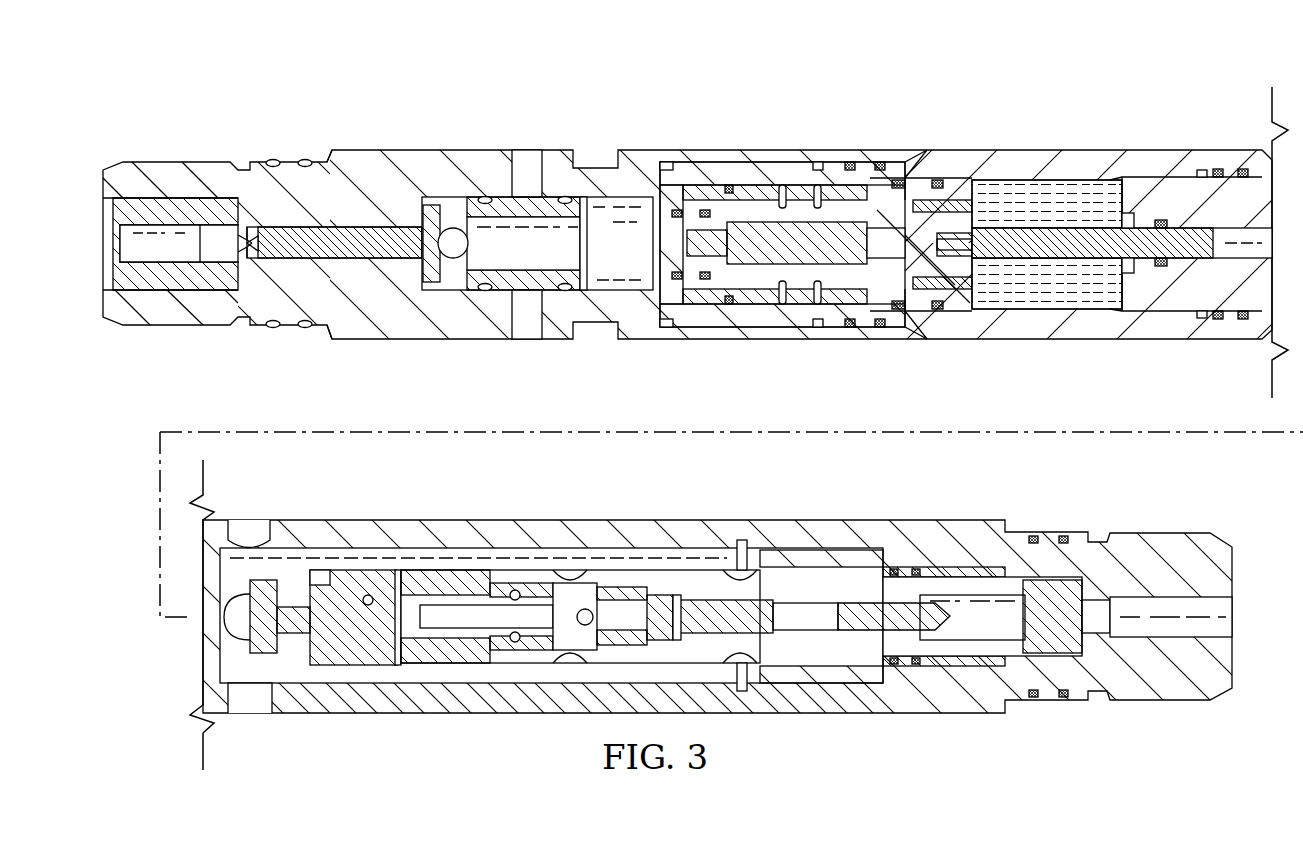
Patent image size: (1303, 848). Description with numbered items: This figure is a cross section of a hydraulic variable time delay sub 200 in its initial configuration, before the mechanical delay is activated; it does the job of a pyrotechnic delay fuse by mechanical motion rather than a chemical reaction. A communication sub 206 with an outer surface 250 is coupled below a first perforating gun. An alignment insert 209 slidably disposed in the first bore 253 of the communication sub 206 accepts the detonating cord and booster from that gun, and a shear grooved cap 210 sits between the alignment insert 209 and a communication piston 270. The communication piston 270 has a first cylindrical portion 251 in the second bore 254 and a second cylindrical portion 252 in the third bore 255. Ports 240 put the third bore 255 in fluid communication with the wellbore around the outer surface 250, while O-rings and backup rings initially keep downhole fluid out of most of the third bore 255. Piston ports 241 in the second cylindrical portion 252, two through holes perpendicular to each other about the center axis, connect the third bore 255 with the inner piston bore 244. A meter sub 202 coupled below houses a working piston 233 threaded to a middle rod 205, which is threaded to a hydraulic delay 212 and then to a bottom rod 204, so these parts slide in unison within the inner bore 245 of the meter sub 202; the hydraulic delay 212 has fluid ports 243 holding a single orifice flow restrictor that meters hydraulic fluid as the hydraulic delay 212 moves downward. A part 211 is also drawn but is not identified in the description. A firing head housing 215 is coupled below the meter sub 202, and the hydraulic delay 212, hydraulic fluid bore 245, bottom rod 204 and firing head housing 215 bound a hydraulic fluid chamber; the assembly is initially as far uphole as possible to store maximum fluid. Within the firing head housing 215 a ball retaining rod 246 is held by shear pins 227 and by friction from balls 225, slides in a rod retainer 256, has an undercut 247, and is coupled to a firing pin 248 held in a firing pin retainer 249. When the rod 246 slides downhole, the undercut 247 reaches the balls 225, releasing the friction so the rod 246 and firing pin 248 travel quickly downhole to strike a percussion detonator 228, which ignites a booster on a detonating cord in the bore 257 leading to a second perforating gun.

The hydraulic variable time delay sub 200 is at (672, 82).
The meter sub 202 is at (1175, 150).
The bottom rod 204 is at (1097, 252).
The middle rod 205 is at (800, 212).
The communication sub 206 is at (158, 318).
The alignment insert 209 is at (157, 196).
The shear grooved cap 210 is at (265, 228).
The shaft 211 is at (768, 282).
The hydraulic delay 212 is at (955, 322).
The firing head housing 215 is at (332, 702).
The balls 225 is at (518, 592).
The shear pins 227 is at (400, 665).
The percussion detonator 228 is at (1052, 585).
The working piston 233 is at (622, 272).
The ports 240 is at (527, 160).
The piston ports 241 is at (452, 258).
The fluid ports 243 is at (910, 200).
The inner piston bore 244 is at (590, 222).
The inner bore 245 is at (1085, 195).
The ball retaining rod 246 is at (265, 652).
The undercut 247 is at (432, 600).
The firing pin 248 is at (885, 642).
The firing pin retainer 249 is at (975, 622).
The outer surface 250 is at (388, 172).
The first cylindrical portion 251 is at (360, 260).
The second cylindrical portion 252 is at (525, 285).
The first bore 253 is at (243, 228).
The second bore 254 is at (243, 260).
The third bore 255 is at (445, 210).
The rod retainer 256 is at (365, 580).
The bore 257 is at (1172, 632).
The communication piston 270 is at (348, 172).